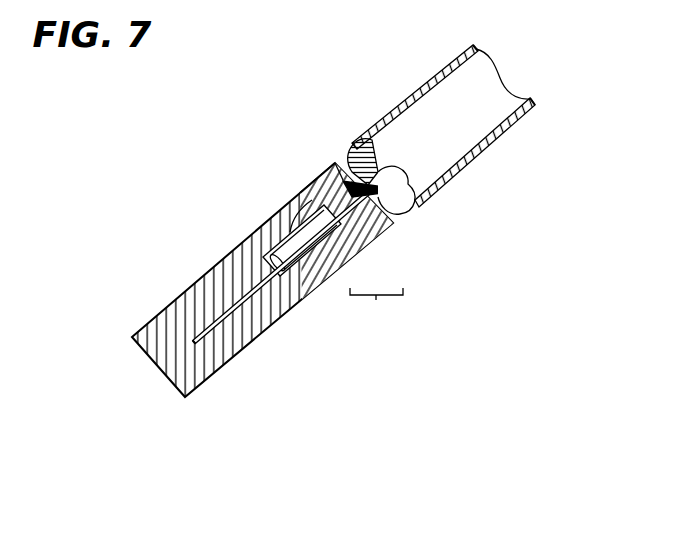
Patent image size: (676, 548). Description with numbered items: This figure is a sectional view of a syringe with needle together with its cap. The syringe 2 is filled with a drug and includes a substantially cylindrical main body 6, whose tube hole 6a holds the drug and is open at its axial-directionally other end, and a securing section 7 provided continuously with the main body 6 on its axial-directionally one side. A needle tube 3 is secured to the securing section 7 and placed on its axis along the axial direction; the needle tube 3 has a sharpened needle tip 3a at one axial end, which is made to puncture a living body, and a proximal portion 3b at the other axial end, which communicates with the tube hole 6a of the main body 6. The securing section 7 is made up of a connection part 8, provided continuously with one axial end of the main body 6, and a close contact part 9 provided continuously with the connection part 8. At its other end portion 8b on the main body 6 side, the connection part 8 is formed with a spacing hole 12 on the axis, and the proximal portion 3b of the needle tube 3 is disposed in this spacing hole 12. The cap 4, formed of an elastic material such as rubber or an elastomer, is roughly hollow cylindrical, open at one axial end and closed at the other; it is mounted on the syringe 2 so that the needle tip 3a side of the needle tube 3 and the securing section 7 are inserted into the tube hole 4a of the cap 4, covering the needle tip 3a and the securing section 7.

The syringe 2 is at (505, 152).
The needle tube 3 is at (266, 283).
The needle tip 3a is at (199, 347).
The proximal portion 3b is at (419, 206).
The cap 4 is at (212, 262).
The tube hole 4a is at (310, 192).
The main body 6 is at (472, 46).
The tube hole 6a is at (527, 97).
The securing section 7 is at (376, 305).
The connection part 8 is at (377, 238).
The other end portion 8b is at (361, 148).
The close contact part 9 is at (346, 262).
The spacing hole 12 is at (350, 176).